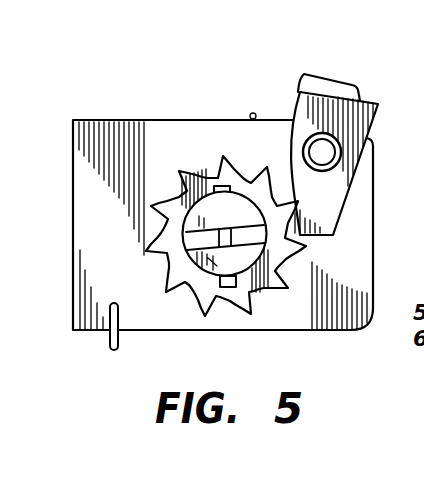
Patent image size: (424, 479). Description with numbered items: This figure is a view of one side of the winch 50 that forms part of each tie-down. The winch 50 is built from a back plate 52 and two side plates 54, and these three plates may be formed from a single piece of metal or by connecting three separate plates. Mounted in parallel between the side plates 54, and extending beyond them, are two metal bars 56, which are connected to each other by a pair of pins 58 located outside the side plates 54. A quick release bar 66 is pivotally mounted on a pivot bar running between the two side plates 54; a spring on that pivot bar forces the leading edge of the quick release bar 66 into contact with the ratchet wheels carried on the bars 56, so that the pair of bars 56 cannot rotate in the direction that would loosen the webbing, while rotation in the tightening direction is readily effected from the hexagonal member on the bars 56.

The winch 50 is at (217, 202).
The back plate 52 is at (73, 162).
The side plate 54 is at (220, 119).
The metal bar 56 is at (212, 212).
The pin 58 is at (216, 185).
The quick release bar 66 is at (361, 92).